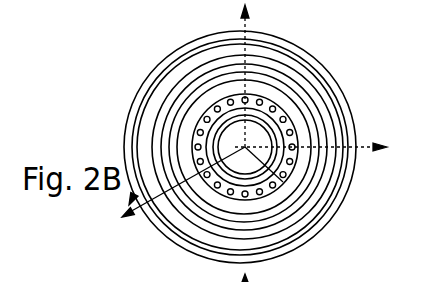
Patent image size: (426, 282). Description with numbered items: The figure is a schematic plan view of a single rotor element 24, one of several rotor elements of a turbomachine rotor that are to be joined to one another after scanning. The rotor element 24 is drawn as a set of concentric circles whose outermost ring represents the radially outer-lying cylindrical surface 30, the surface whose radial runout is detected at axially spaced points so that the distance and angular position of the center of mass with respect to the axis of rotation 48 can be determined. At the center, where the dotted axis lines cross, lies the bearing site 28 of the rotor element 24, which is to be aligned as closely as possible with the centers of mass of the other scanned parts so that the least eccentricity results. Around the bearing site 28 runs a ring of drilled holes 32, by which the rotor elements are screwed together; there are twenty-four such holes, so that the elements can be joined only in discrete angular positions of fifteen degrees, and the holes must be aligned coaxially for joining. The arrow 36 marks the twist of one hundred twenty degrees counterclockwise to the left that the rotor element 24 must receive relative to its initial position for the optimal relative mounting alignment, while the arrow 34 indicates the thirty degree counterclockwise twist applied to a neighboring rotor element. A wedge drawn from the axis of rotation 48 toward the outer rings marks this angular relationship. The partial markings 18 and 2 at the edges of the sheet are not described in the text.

The arrow 36 is at (153, 68).
The radially outer-lying cylindrical surface 30 is at (350, 98).
The rotor element 24 is at (343, 202).
The drilled holes 32 is at (275, 108).
The bearing site 28 is at (232, 169).
The vertical axis 18 is at (216, 73).
The horizontal axis 2 is at (330, 135).
The axis of rotation 48 is at (283, 182).
The arrow 34 is at (218, 276).